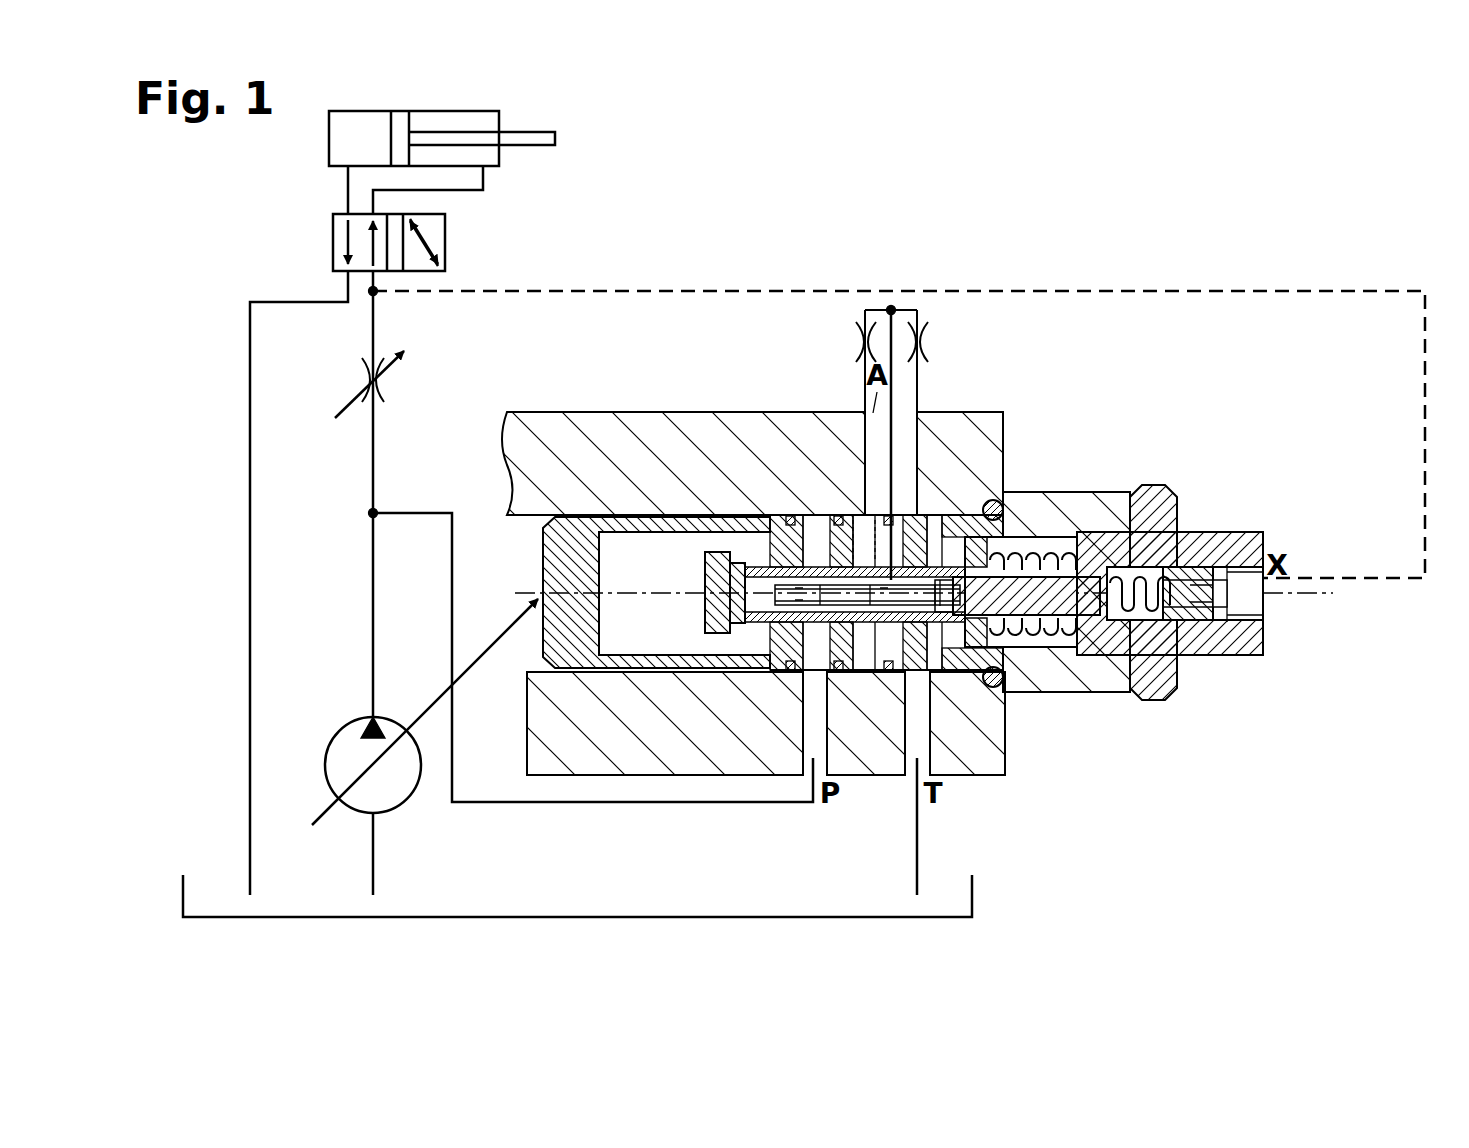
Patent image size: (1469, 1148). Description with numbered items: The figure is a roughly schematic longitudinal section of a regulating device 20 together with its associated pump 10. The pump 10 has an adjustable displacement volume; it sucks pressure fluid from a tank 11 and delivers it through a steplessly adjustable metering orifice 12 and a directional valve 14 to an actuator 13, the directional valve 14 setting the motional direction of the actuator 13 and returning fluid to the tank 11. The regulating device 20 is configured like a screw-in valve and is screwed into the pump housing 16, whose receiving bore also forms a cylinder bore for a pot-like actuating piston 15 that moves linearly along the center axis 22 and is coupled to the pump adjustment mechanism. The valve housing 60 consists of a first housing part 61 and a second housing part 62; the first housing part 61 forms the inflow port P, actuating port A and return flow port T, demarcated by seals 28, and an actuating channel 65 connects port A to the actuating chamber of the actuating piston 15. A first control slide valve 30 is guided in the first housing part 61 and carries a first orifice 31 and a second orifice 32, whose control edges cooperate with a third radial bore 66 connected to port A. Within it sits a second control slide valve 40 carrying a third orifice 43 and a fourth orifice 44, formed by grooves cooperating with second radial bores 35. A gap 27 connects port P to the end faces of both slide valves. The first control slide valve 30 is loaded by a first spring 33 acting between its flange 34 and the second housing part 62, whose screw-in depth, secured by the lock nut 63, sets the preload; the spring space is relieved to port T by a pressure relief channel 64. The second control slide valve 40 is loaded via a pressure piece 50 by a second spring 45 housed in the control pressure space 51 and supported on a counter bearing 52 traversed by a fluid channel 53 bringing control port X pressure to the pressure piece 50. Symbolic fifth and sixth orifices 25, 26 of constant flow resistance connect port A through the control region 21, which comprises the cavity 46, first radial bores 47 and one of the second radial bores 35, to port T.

The pump 10 is at (390, 848).
The tank 11 is at (975, 893).
The metering orifice 12 is at (378, 385).
The actuator 13 is at (329, 137).
The directional valve 14 is at (333, 238).
The actuating piston 15 is at (575, 700).
The pump housing 16 is at (600, 740).
The regulating device 20 is at (1299, 765).
The control region 21 is at (891, 310).
The center axis 22 is at (1303, 597).
The fifth orifice 25 is at (860, 340).
The sixth orifice 26 is at (925, 340).
The gap 27 is at (730, 660).
The seals 28 is at (838, 672).
The first control slide valve 30 is at (757, 542).
The first orifice 31 is at (830, 580).
The second orifice 32 is at (860, 570).
The first spring 33 is at (1042, 550).
The flange 34 is at (1022, 577).
The second radial bores 35 is at (955, 580).
The second control slide valve 40 is at (760, 582).
The third orifice 43 is at (800, 575).
The fourth orifice 44 is at (945, 578).
The second spring 45 is at (1112, 532).
The cavity 46 is at (850, 612).
The first radial bores 47 is at (790, 680).
The pressure piece 50 is at (1180, 625).
The control pressure space 51 is at (1138, 622).
The counter bearing 52 is at (1178, 665).
The fluid channel 53 is at (1188, 567).
The valve housing 60 is at (1022, 680).
The first housing part 61 is at (993, 677).
The second housing part 62 is at (1250, 532).
The lock nut 63 is at (1205, 625).
The pressure relief channel 64 is at (1012, 690).
The actuating channel 65 is at (780, 545).
The third radial bore 66 is at (846, 560).